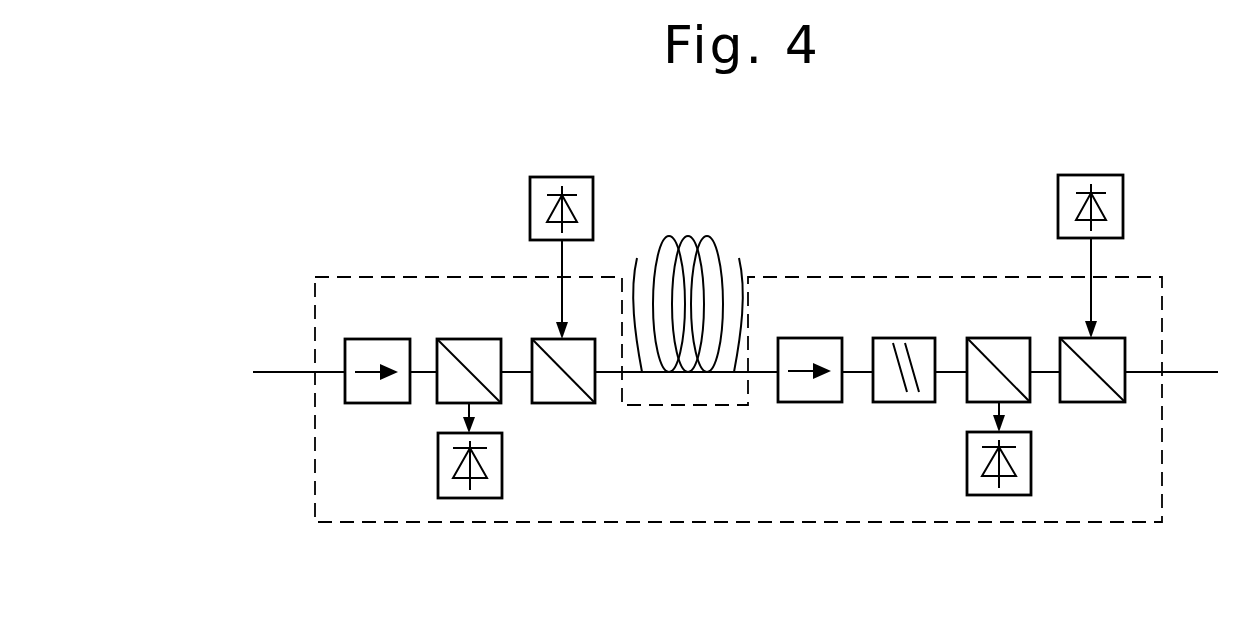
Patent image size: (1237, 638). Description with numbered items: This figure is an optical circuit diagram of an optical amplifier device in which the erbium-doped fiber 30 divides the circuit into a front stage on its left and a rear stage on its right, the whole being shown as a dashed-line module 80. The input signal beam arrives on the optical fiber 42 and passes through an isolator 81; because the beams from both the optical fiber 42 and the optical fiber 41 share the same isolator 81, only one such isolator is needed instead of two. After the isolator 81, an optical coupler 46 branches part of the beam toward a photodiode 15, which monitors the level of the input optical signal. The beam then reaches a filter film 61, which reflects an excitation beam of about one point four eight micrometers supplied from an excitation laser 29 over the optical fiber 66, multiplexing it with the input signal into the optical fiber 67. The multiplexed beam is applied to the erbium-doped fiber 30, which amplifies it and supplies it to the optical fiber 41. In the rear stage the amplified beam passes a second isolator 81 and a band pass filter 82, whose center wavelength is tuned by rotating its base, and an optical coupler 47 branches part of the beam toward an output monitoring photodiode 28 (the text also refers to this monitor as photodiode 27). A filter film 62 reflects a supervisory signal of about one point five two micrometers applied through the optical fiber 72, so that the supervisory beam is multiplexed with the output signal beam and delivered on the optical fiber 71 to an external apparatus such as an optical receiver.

The photodiode 15 is at (502, 478).
The photodiode 27 is at (1123, 183).
The output monitoring photodiode 28 is at (1031, 476).
The excitation laser 29 is at (593, 191).
The erbium-doped fiber 30 is at (714, 248).
The optical fiber 41 is at (748, 301).
The optical fiber 42 is at (277, 372).
The optical coupler 46 is at (497, 339).
The optical coupler 47 is at (1009, 338).
The filter film 61 is at (591, 339).
The filter film 62 is at (1119, 338).
The optical fiber 66 is at (562, 258).
The optical fiber 67 is at (636, 301).
The optical fiber 71 is at (1206, 372).
The optical fiber 72 is at (1087, 258).
The optical amplifier module 80 is at (916, 275).
The isolator 81 is at (372, 405).
The band pass filter 82 is at (905, 403).